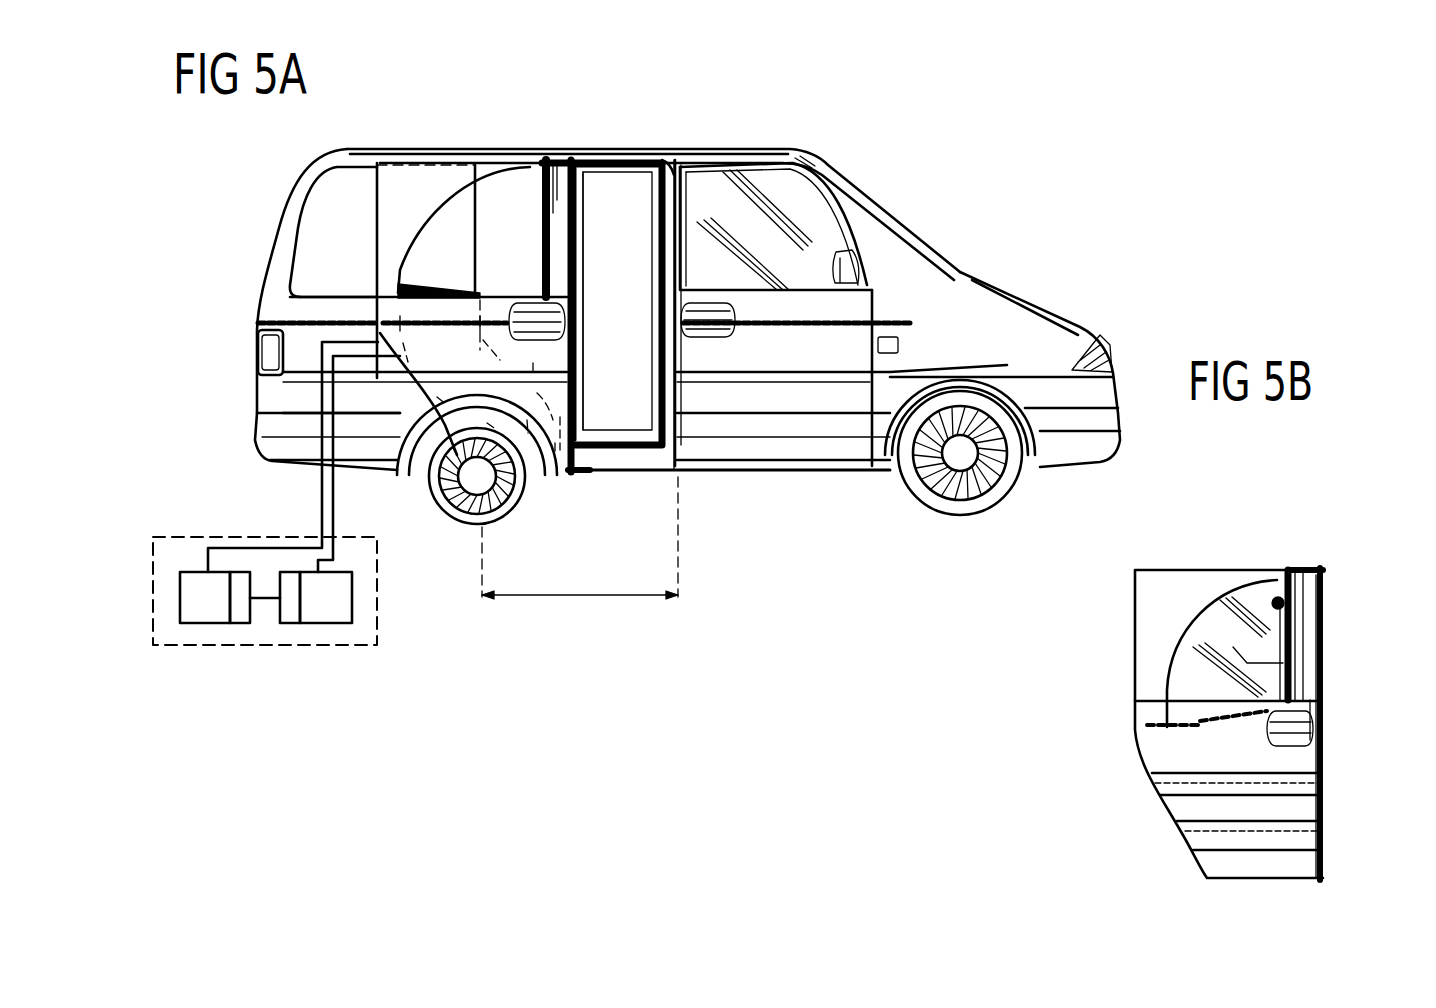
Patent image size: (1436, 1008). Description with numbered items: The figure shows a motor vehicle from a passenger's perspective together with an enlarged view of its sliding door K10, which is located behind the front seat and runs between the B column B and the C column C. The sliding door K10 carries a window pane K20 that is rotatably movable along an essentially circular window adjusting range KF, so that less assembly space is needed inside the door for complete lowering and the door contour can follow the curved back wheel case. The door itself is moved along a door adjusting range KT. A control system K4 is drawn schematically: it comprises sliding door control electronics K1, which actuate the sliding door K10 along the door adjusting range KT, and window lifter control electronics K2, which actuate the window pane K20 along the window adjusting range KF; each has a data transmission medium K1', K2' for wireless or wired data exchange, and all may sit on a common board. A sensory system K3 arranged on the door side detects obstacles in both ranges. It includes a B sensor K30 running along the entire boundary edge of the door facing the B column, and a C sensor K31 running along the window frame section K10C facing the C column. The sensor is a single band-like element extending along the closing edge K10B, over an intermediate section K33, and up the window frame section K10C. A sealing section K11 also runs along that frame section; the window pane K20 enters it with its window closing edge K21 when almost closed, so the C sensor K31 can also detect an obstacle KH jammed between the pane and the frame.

In FIG. 5A, the sliding door K10 is at (388, 240).
In FIG. 5B, the sliding door K10 is at (1147, 593).
In FIG. 5A, the window pane K20 is at (400, 295).
In FIG. 5B, the window pane K20 is at (1182, 682).
In FIG. 5A, the C column C is at (472, 217).
In FIG. 5A, the sealing section K11 is at (541, 245).
In FIG. 5B, the sealing section K11 is at (1233, 647).
In FIG. 5A, the C sensor K31 is at (540, 210).
In FIG. 5B, the C sensor K31 is at (1270, 590).
In FIG. 5A, the window frame section K10C is at (553, 213).
In FIG. 5B, the window frame section K10C is at (1302, 567).
In FIG. 5A, the intermediate section K33 is at (567, 150).
In FIG. 5B, the intermediate section K33 is at (1313, 568).
In FIG. 5A, the B sensor K30 is at (573, 217).
In FIG. 5B, the B sensor K30 is at (1325, 627).
In FIG. 5A, the B column B is at (670, 227).
In FIG. 5A, the window adjusting range KF is at (533, 263).
In FIG. 5A, the closing edge K10B is at (577, 273).
In FIG. 5B, the closing edge K10B is at (1322, 687).
In FIG. 5A, the sensory system K3 is at (588, 296).
In FIG. 5B, the sensory system K3 is at (1346, 722).
In FIG. 5A, the door adjusting range KT is at (580, 538).
In FIG. 5A, the sliding door control electronics K1 is at (194, 649).
In FIG. 5A, the data transmission medium K1' is at (251, 649).
In FIG. 5A, the data transmission medium K2' is at (285, 649).
In FIG. 5A, the window lifter control electronics K2 is at (326, 649).
In FIG. 5A, the control system K4 is at (373, 608).
In FIG. 5B, the obstacle KH is at (1277, 597).
In FIG. 5B, the window closing edge K21 is at (1283, 653).